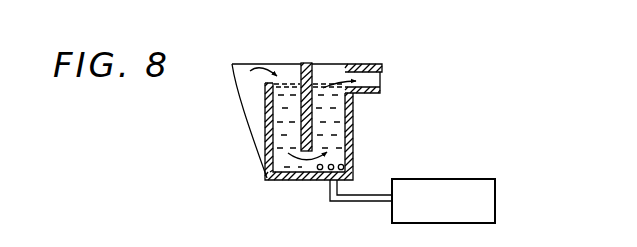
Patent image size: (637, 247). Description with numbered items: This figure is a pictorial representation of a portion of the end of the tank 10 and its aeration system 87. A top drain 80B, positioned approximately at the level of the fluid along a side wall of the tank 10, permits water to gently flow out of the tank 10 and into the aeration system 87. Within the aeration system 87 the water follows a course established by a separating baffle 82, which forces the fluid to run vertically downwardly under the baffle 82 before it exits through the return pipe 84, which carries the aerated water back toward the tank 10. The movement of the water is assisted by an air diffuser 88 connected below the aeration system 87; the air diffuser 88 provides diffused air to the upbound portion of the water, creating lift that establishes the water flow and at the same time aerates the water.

The tank 10 is at (267, 120).
The top drain 80B is at (259, 78).
The separating baffle 82 is at (311, 72).
The return pipe 84 is at (381, 70).
The aeration system 87 is at (353, 135).
The air diffuser 88 is at (495, 211).